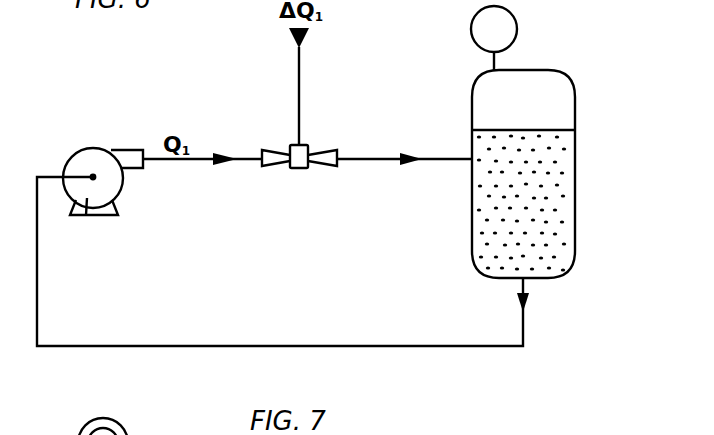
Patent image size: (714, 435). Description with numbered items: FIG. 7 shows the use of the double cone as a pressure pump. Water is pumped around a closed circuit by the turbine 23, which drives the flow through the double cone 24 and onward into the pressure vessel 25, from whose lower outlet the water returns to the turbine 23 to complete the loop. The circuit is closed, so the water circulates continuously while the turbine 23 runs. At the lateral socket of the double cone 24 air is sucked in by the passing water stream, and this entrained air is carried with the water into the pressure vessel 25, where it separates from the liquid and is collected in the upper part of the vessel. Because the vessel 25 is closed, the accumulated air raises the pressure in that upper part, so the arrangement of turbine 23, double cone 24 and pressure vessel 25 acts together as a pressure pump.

The turbine 23 is at (88, 213).
The double cone 24 is at (291, 170).
The pressure vessel 25 is at (548, 162).